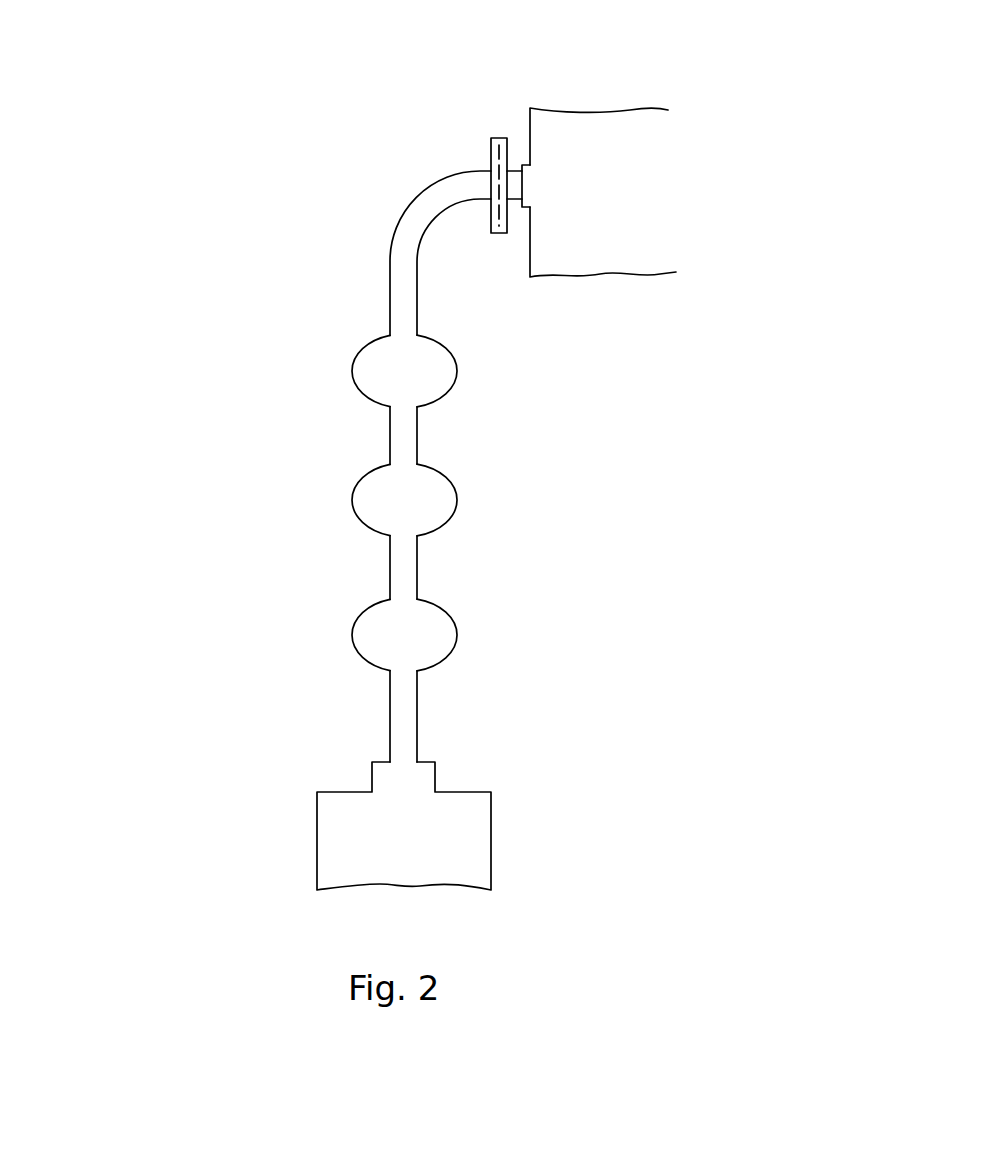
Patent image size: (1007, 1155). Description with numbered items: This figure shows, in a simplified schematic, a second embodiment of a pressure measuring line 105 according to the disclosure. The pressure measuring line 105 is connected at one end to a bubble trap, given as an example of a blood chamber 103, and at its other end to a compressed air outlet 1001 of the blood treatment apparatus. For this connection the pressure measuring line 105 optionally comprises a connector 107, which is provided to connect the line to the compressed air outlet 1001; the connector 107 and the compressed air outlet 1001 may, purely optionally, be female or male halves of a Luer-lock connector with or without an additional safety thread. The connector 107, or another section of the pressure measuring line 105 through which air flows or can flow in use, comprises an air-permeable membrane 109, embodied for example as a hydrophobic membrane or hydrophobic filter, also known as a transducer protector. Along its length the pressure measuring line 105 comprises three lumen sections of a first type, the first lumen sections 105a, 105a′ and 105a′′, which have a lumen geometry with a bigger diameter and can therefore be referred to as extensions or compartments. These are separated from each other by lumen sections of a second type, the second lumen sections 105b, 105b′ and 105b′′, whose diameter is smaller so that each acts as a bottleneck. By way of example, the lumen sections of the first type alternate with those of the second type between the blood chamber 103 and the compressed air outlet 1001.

The blood chamber 103 is at (404, 826).
The pressure measuring line 105 is at (351, 466).
The first lumen section 105a is at (457, 632).
The first lumen section 105a′ is at (457, 498).
The first lumen section 105a′′ is at (457, 382).
The second lumen section 105b is at (390, 563).
The second lumen section 105b′ is at (390, 438).
The second lumen section 105b′′ is at (390, 257).
The connector 107 is at (441, 123).
The air-permeable membrane 109 is at (491, 152).
The compressed air outlet 1001 is at (599, 192).